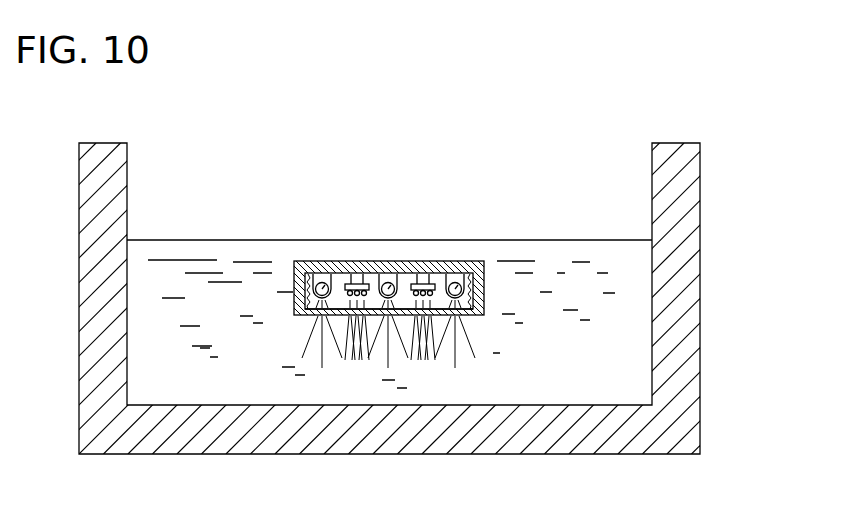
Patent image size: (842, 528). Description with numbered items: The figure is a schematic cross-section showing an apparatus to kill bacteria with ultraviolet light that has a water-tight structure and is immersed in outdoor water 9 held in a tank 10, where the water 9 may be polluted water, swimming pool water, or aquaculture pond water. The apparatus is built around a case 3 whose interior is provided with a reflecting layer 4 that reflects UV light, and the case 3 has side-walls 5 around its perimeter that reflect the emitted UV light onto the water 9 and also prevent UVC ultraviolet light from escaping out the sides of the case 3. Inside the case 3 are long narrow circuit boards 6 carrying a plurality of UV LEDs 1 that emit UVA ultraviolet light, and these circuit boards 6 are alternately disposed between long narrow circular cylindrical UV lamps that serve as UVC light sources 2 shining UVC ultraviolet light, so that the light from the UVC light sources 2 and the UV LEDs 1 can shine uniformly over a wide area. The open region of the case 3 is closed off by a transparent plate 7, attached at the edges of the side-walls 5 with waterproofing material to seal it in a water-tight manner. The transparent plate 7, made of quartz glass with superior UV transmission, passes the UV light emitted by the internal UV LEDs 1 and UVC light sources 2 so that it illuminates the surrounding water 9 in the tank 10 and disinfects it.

The UV LED 1 is at (337, 262).
The UVC light source 2 is at (326, 262).
The case 3 is at (375, 262).
The reflecting layer 4 is at (313, 262).
The side-wall 5 is at (293, 298).
The circuit board 6 is at (363, 262).
The transparent plate 7 is at (310, 317).
The water 9 is at (565, 292).
The tank 10 is at (675, 303).